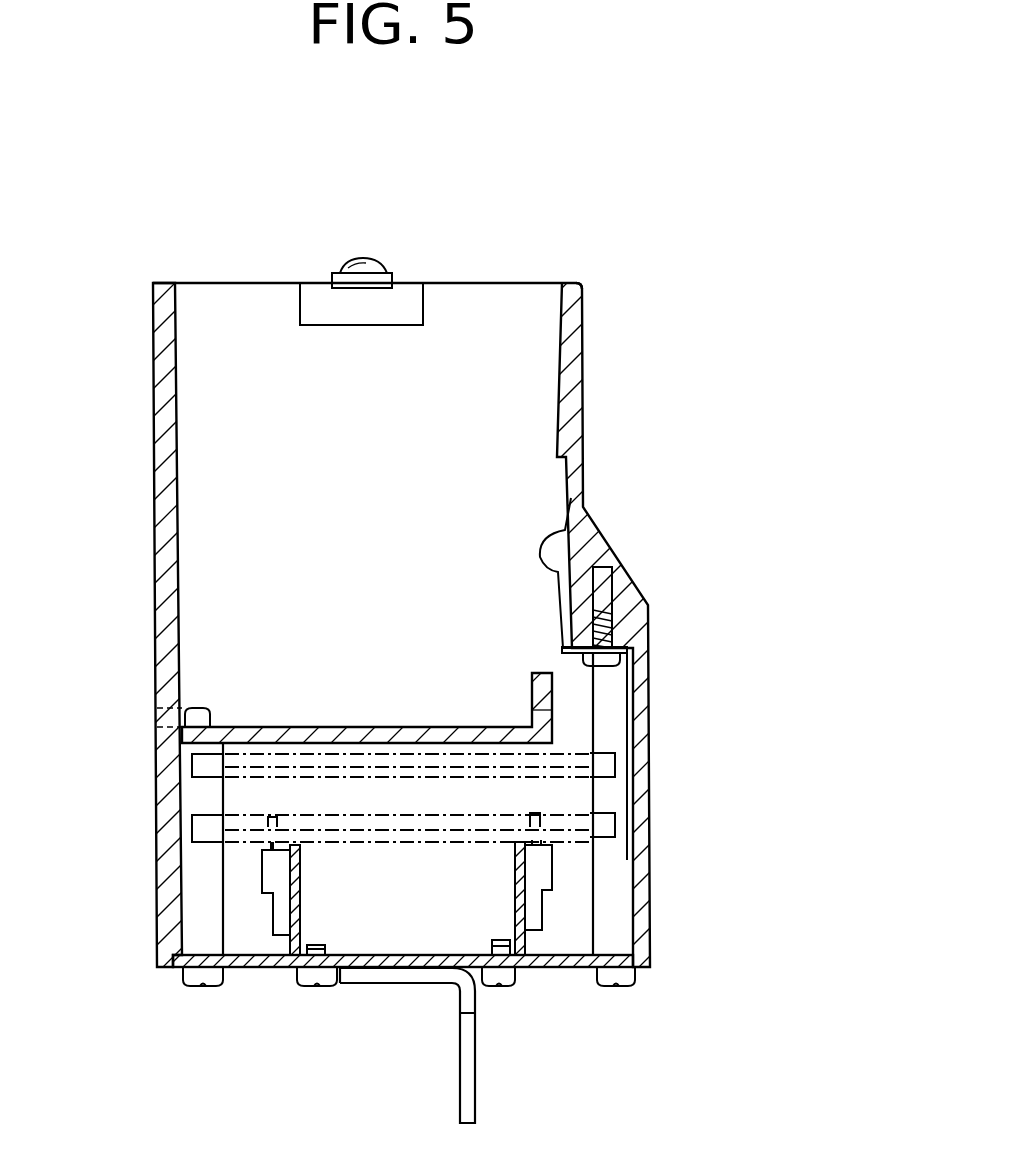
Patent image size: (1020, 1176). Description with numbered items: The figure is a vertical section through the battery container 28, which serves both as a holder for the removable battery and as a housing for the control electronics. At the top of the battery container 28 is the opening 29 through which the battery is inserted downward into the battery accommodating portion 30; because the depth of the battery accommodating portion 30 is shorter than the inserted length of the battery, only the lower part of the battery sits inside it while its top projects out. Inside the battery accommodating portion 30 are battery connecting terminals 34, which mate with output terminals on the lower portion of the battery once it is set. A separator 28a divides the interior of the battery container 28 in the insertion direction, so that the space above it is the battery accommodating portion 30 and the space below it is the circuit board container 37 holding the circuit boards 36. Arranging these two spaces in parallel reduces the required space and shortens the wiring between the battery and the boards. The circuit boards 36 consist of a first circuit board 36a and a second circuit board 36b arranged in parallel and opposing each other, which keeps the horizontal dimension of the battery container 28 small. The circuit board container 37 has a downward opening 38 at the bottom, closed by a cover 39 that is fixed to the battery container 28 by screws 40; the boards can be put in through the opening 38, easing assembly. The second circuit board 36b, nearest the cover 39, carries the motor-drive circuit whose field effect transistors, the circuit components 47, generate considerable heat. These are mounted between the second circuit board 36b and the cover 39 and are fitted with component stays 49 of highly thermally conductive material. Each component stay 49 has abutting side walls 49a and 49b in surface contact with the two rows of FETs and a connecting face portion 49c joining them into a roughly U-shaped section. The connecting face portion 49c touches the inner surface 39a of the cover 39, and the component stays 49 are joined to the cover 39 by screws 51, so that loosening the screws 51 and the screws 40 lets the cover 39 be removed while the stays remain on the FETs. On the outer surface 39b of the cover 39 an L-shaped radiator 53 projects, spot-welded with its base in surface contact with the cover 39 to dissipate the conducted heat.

The battery container 28 is at (590, 238).
The separator 28a is at (480, 722).
The opening 29 is at (503, 283).
The battery accommodating portion 30 is at (369, 498).
The battery connecting terminals 34 is at (565, 533).
The circuit boards 36 is at (521, 777).
The first circuit board 36a is at (550, 767).
The second circuit board 36b is at (550, 832).
The circuit board container 37 is at (250, 937).
The opening 38 is at (575, 953).
The cover 39 is at (250, 967).
The inner surface 39a is at (550, 957).
The outer surface 39b is at (563, 968).
The screws 40 is at (208, 987).
The circuit components 47 is at (273, 868).
The component stays 49 is at (552, 890).
The abutting side wall 49a is at (290, 900).
The abutting side wall 49b is at (515, 900).
The connecting face portion 49c is at (376, 985).
The screws 51 is at (322, 987).
The radiator 53 is at (476, 1104).